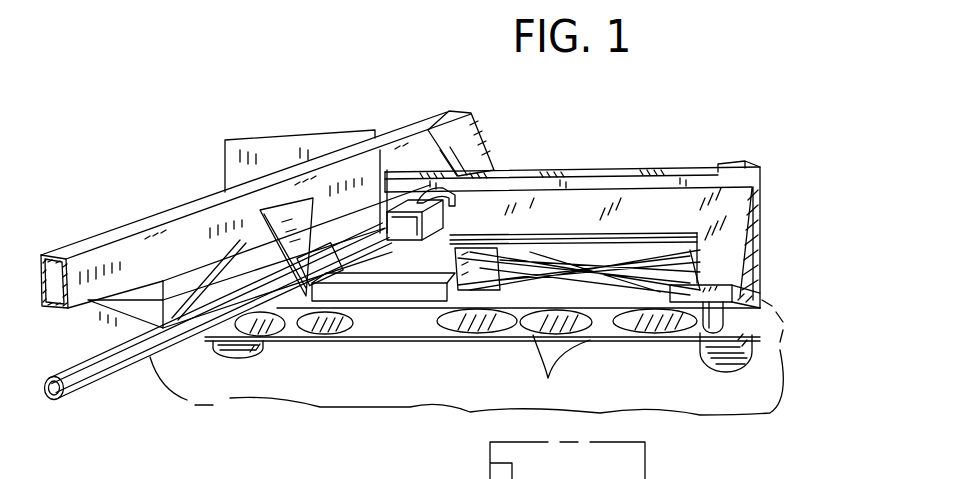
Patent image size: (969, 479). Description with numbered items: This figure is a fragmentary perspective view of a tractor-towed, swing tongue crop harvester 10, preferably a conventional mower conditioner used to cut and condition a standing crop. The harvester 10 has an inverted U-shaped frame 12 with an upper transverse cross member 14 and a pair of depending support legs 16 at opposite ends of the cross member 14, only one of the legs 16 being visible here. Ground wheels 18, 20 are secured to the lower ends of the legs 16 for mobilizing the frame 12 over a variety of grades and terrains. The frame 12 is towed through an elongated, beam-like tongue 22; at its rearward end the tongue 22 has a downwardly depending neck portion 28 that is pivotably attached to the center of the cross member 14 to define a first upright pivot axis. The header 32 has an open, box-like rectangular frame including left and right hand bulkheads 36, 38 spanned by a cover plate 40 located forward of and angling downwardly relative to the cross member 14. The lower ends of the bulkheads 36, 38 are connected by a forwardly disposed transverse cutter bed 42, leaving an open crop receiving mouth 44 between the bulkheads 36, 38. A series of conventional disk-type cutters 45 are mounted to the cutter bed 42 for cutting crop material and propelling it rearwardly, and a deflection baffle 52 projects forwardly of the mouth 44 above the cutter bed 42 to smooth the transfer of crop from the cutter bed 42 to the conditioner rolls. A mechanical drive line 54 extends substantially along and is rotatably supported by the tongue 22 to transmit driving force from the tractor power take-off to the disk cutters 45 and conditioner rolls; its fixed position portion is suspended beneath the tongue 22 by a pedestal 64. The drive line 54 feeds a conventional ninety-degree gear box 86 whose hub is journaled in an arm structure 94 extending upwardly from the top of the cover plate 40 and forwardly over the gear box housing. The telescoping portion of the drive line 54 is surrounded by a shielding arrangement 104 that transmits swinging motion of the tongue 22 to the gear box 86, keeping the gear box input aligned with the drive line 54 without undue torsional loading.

The crop harvester 10 is at (745, 113).
The frame 12 is at (617, 160).
The upper transverse cross member 14 is at (547, 205).
The support legs 16 is at (752, 297).
The ground wheel 18 is at (238, 352).
The ground wheel 20 is at (743, 358).
The tongue 22 is at (160, 218).
The neck portion 28 is at (470, 136).
The header 32 is at (418, 337).
The left hand bulkhead 36 is at (113, 307).
The right hand bulkhead 38 is at (703, 270).
The cover plate 40 is at (617, 217).
The cutter bed 42 is at (452, 338).
The crop receiving mouth 44 is at (512, 255).
The disk-type cutters 45 is at (561, 371).
The deflection baffle 52 is at (400, 292).
The drive line 54 is at (128, 382).
The pedestal 64 is at (282, 212).
The gear box 86 is at (418, 257).
The arm structure 94 is at (511, 157).
The shielding arrangement 104 is at (383, 188).